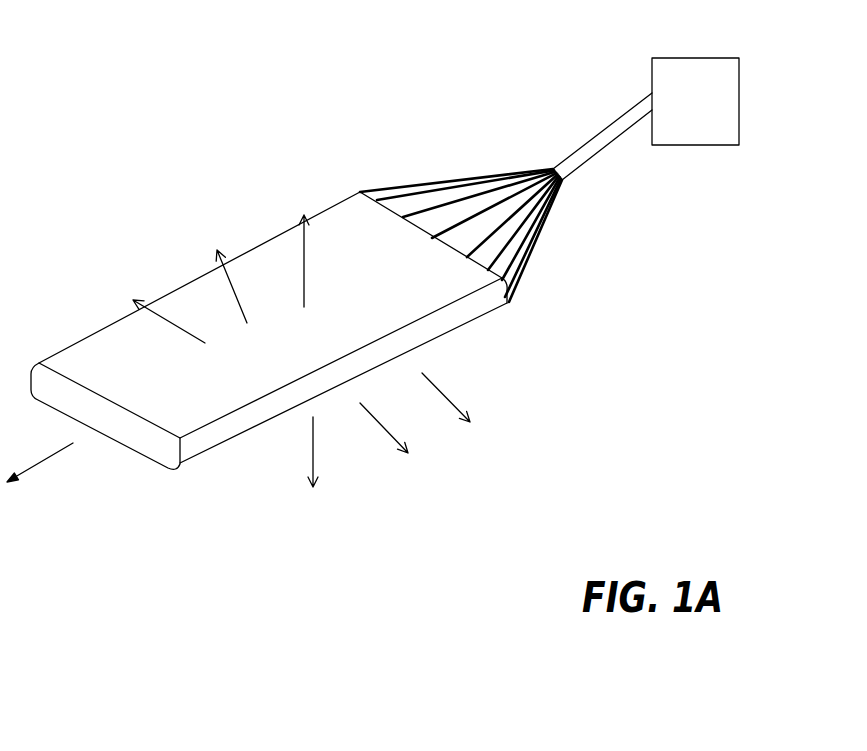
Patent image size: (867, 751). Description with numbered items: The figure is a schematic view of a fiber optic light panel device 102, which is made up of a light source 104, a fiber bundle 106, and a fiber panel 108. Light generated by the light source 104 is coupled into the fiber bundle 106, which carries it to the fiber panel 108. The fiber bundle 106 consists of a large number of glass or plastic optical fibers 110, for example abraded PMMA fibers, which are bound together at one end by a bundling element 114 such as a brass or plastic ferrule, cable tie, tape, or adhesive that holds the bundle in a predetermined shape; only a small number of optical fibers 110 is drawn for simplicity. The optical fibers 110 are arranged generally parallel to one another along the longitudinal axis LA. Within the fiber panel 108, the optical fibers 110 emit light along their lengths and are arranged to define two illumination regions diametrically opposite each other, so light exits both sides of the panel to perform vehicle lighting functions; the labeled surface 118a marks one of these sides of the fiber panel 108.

The fiber optic light panel device 102 is at (117, 120).
The light source 104 is at (695, 101).
The fiber bundle 106 is at (452, 155).
The fiber panel 108 is at (304, 338).
The optical fibers 110 is at (530, 273).
The bundling element 114 is at (605, 147).
The major surface 118a is at (270, 315).